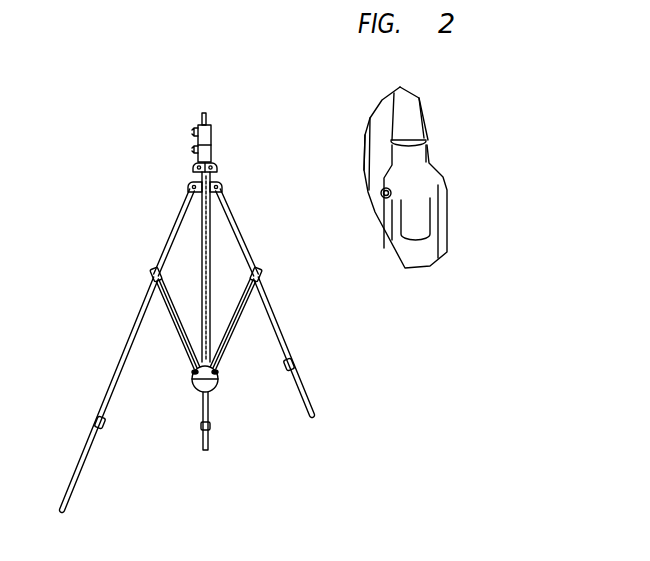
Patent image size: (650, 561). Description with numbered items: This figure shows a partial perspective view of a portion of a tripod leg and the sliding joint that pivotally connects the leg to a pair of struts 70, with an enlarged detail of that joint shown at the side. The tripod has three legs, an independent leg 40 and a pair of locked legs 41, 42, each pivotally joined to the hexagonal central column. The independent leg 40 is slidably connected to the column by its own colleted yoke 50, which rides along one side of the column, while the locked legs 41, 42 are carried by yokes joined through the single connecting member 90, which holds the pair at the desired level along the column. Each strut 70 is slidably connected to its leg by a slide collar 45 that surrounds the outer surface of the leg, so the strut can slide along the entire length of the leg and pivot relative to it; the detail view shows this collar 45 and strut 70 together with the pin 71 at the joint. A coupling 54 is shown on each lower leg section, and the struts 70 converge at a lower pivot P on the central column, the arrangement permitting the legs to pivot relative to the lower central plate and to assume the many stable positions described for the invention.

The independent leg 40 is at (212, 415).
The locked leg 41 is at (245, 246).
The locked leg 42 is at (173, 236).
The slide collar 45 is at (152, 272).
The colleted yoke 50 is at (218, 160).
The leg coupling 54 is at (97, 423).
The strut 70 is at (238, 335).
The pivot pin 71 is at (446, 174).
The single connecting member 90 is at (190, 187).
The base pivot P is at (188, 392).